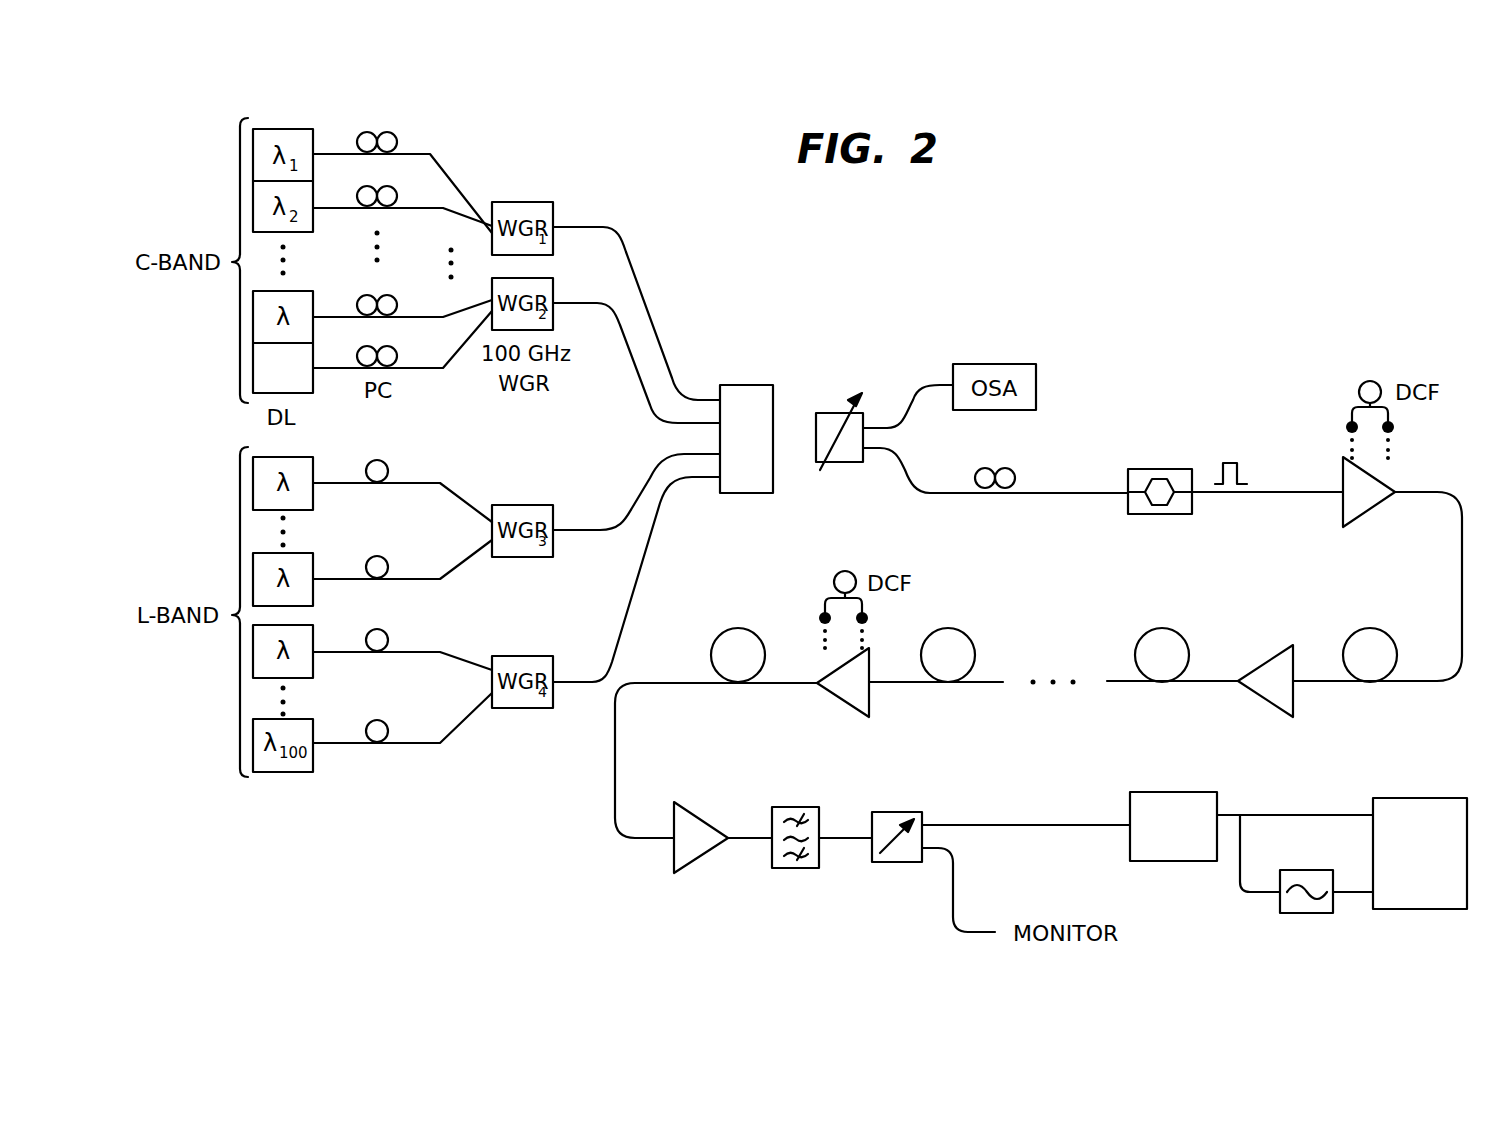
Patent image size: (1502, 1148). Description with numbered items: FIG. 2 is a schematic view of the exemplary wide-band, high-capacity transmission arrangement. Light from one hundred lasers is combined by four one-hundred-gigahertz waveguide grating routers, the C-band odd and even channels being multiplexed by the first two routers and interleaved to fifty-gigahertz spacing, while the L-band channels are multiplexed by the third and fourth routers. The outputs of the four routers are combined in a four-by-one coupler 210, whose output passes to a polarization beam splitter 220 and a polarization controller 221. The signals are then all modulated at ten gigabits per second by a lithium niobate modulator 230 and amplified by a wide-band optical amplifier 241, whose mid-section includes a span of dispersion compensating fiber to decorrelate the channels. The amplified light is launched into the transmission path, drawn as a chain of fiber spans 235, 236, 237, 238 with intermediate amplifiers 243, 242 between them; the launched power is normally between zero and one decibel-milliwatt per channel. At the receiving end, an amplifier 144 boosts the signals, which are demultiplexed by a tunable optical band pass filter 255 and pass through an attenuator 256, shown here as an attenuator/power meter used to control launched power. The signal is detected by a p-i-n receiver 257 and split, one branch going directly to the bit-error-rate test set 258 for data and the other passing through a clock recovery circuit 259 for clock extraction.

The optical amplifier 144 is at (670, 858).
The 4x1 coupler 210 is at (766, 452).
The polarization beam splitter 220 is at (835, 413).
The polarization controller 221 is at (1008, 468).
The LiNbO3 modulator 230 is at (1122, 510).
The 90 km fiber span 235 is at (1377, 622).
The 90 km fiber span 236 is at (1167, 622).
The 110 km fiber span 237 is at (953, 622).
The 110 km fiber span 238 is at (742, 622).
The wide-band optical amplifier 241 is at (1388, 480).
The erbium doped fiber amplifier 242 is at (872, 703).
The optical amplifier 243 is at (1272, 655).
The band pass filter 255 is at (797, 807).
The attenuator 256 is at (923, 817).
The PIN receiver 257 is at (1177, 792).
The bit error rate test set 258 is at (1423, 798).
The clock recovery circuit 259 is at (1277, 909).